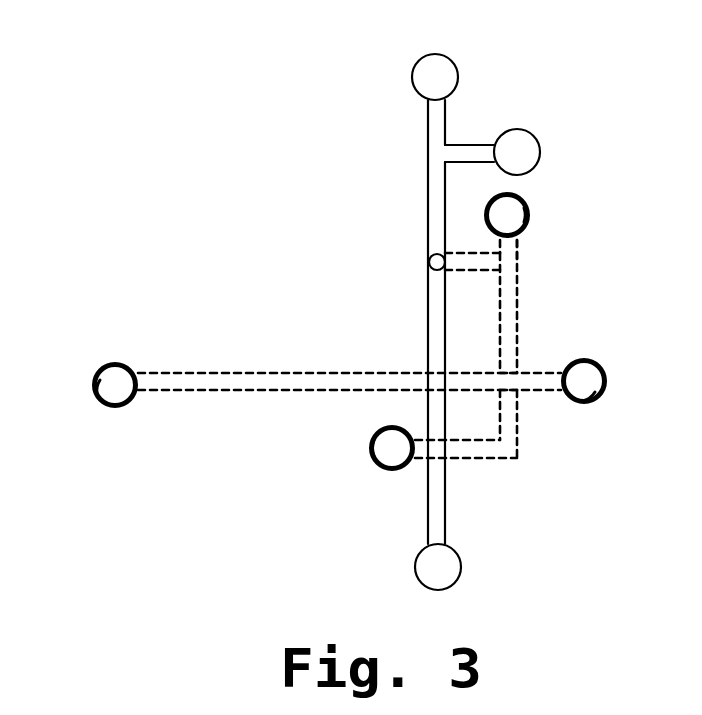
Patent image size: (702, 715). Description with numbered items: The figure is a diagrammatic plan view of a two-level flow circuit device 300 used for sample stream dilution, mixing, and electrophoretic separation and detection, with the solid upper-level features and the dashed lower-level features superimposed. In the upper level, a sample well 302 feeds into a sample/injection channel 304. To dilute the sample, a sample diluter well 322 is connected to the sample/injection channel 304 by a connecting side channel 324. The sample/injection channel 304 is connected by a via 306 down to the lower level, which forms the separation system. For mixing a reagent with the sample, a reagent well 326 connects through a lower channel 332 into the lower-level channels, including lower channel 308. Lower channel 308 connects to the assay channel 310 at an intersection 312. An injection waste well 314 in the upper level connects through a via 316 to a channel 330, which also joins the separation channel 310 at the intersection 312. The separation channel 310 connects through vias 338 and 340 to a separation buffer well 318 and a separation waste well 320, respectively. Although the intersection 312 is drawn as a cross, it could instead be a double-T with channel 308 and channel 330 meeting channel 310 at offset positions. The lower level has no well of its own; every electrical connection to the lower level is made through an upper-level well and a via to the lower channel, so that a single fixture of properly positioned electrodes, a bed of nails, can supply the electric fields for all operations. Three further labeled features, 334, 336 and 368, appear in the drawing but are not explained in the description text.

The device 300 is at (288, 216).
The sample well 302 is at (450, 60).
The sample/injection channel 304 is at (432, 182).
The via 306 is at (430, 261).
The lower channel 308 is at (514, 296).
The assay channel 310 is at (290, 378).
The intersection 312 is at (508, 380).
The injection waste well 314 is at (374, 432).
The via 316 is at (380, 452).
The separation buffer well 318 is at (596, 362).
The separation waste well 320 is at (97, 368).
The sample diluter well 322 is at (535, 134).
The connecting side channel 324 is at (465, 148).
The reagent well 326 is at (521, 200).
The channel 330 is at (518, 430).
The lower channel 332 is at (515, 249).
The reservoir 334 is at (461, 566).
The electrode 336 is at (528, 219).
The via 338 is at (593, 398).
The via 340 is at (102, 392).
The channel segment 368 is at (472, 256).